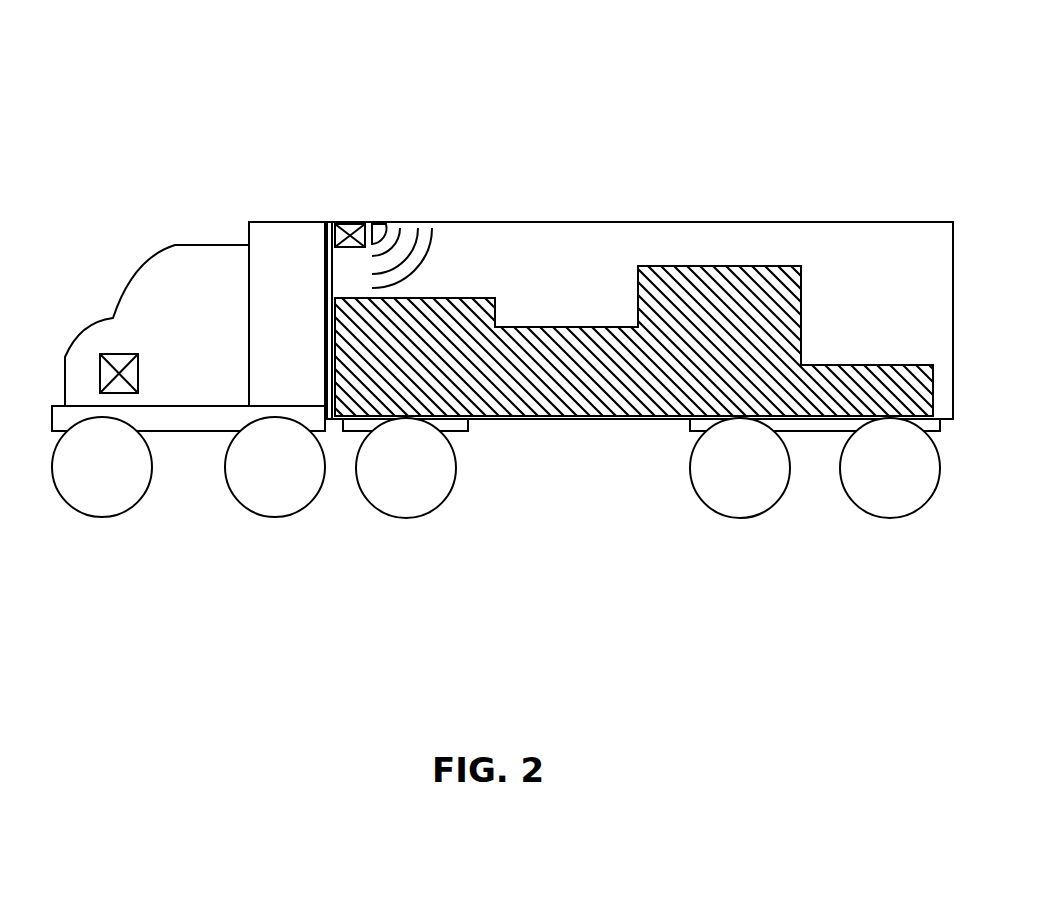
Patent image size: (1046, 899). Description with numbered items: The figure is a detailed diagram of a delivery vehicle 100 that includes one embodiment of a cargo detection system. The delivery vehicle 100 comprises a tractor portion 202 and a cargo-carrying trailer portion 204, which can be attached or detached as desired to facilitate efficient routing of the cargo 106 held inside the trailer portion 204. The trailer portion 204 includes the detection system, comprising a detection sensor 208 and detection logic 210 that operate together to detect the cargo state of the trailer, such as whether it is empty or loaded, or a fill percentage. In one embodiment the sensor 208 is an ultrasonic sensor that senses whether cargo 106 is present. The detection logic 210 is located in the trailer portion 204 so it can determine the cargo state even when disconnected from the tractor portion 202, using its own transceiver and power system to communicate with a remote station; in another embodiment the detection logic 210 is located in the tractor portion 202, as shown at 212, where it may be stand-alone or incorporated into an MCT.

The delivery vehicle 100 is at (485, 72).
The cargo 106 is at (545, 388).
The tractor portion 202 is at (186, 430).
The trailer portion 204 is at (613, 399).
The detection sensor 208 is at (377, 222).
The detection logic 210 is at (352, 223).
The detection logic location in tractor portion 212 is at (118, 354).